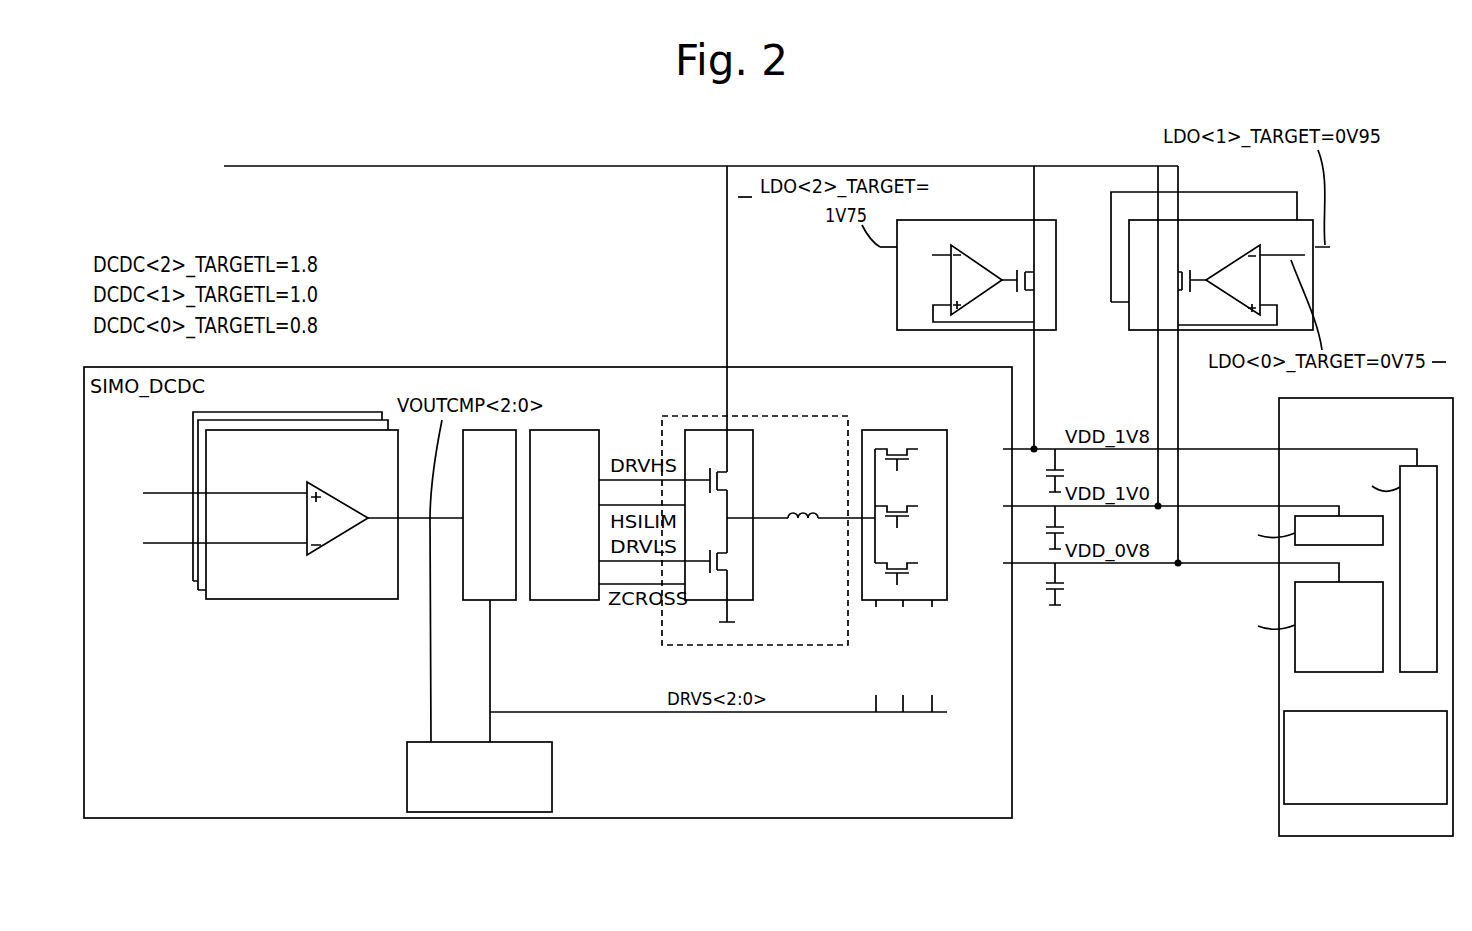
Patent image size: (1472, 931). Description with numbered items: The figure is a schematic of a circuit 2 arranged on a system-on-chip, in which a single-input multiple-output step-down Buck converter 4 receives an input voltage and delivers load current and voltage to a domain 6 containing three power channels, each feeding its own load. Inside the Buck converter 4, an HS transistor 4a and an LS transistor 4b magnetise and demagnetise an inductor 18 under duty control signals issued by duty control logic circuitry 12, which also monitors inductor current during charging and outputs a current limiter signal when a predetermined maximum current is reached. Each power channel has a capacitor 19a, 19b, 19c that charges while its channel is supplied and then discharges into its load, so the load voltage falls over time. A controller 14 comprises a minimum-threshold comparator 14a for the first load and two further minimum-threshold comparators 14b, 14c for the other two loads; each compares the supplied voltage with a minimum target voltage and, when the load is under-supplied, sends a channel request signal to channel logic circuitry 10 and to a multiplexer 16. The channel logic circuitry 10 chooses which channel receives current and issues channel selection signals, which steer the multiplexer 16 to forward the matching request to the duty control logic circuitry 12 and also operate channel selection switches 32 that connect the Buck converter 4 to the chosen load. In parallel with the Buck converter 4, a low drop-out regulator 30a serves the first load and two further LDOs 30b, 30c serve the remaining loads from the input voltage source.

The circuit 2 is at (314, 147).
The SIMO step-down DCDC Buck converter 4 is at (761, 420).
The HS transistor 4a is at (708, 470).
The LS transistor 4b is at (708, 578).
The domain 6 is at (1391, 431).
The channel logic circuitry 10 is at (407, 770).
The duty control logic circuitry 12 is at (571, 597).
The controller 14 is at (244, 522).
The minimum-threshold comparator 14a is at (341, 578).
The minimum-threshold comparator 14b is at (316, 424).
The minimum-threshold comparator 14c is at (193, 431).
The multiplexer 16 is at (502, 597).
The inductor 18 is at (803, 527).
The capacitor 19a is at (1050, 464).
The capacitor 19b is at (1048, 532).
The capacitor 19c is at (1065, 590).
The low drop-out regulator 30a is at (897, 312).
The low drop-out regulator 30b is at (1120, 192).
The low drop-out regulator 30c is at (1212, 316).
The channel selection switches 32 is at (958, 610).